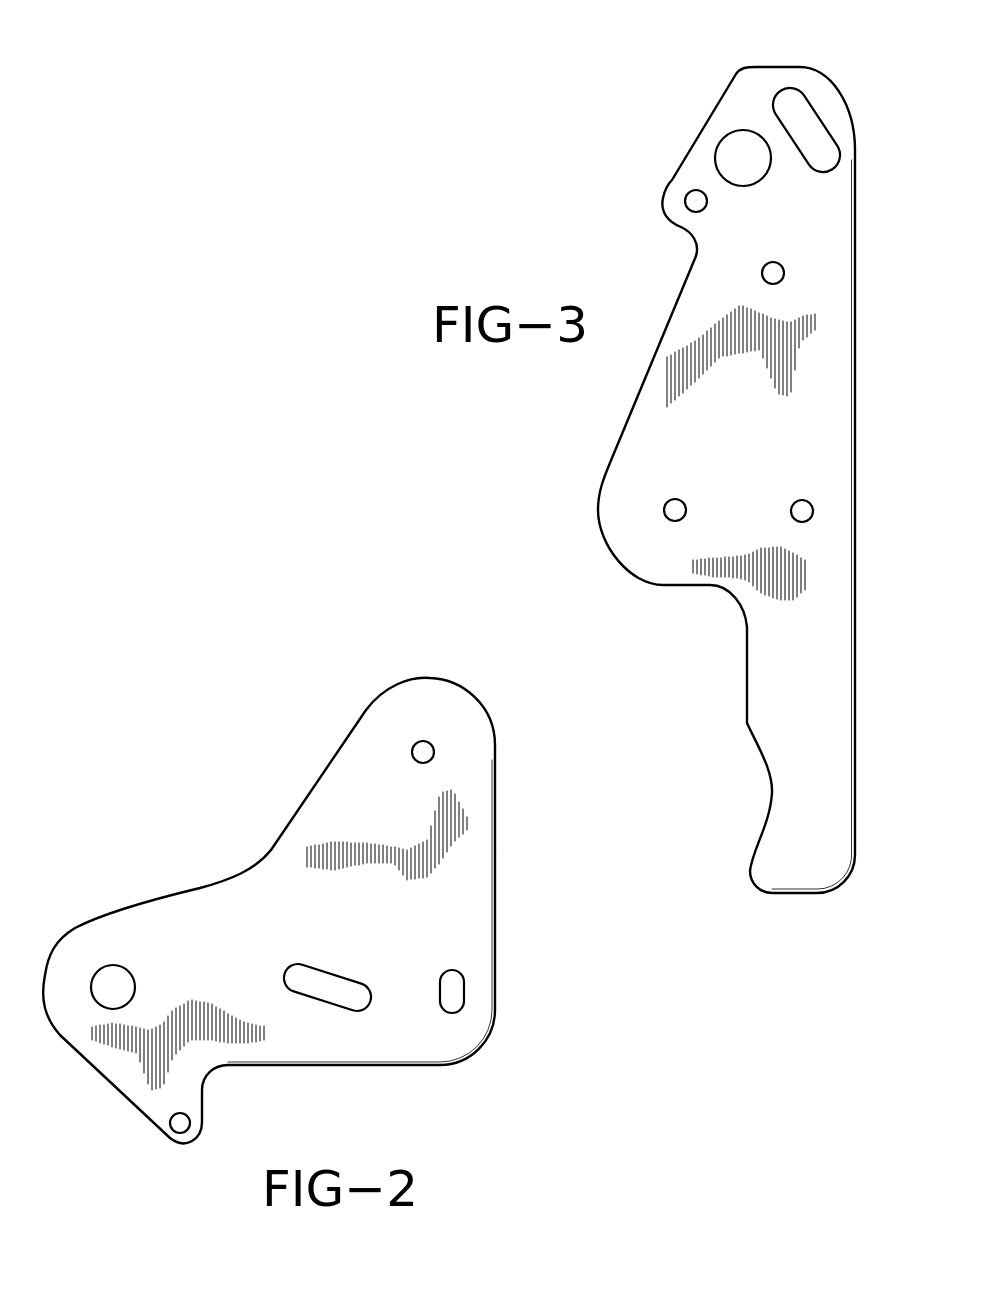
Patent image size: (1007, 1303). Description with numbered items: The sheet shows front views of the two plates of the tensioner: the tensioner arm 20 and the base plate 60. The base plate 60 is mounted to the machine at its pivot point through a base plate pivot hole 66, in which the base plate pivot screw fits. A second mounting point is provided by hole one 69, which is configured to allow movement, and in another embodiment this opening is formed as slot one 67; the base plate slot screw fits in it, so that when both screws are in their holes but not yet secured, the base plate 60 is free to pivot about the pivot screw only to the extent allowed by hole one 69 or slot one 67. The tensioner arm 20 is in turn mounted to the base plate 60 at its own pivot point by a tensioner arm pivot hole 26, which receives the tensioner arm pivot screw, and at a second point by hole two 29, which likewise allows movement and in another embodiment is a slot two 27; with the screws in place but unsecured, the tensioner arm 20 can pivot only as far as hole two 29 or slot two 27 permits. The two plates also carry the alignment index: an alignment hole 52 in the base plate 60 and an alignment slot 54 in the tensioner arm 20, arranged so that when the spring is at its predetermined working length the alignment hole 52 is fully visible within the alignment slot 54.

In FIG. 2, the tensioner arm 20 is at (208, 870).
In FIG. 2, the tensioner arm pivot hole 26 is at (412, 752).
In FIG. 2, the slot two 27 is at (323, 1040).
In FIG. 2, the hole two 29 is at (328, 1003).
In FIG. 2, the alignment slot 54 is at (465, 995).
In FIG. 3, the base plate 60 is at (612, 572).
In FIG. 3, the base plate pivot hole 66 is at (698, 200).
In FIG. 3, the slot one 67 is at (815, 90).
In FIG. 3, the hole one 69 is at (797, 108).
In FIG. 3, the alignment hole 52 is at (808, 505).